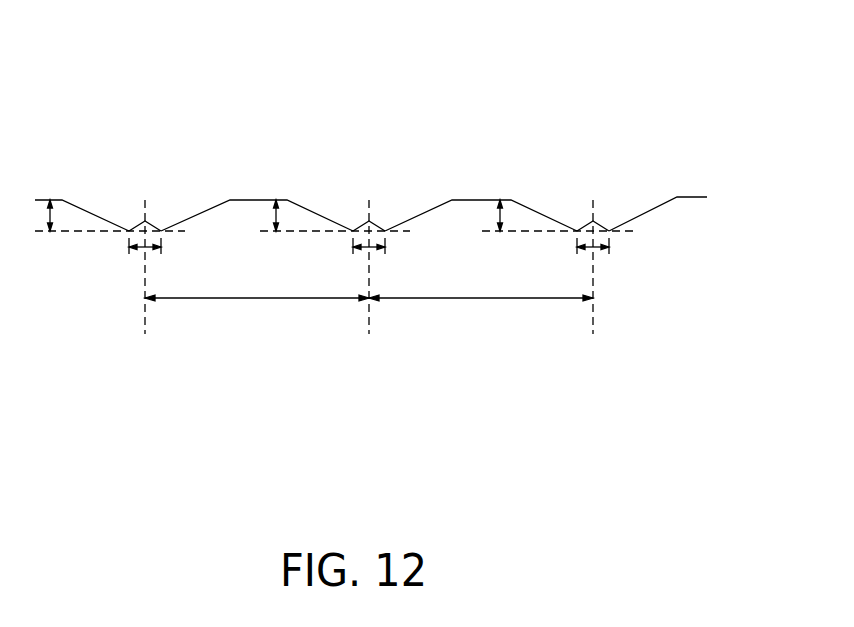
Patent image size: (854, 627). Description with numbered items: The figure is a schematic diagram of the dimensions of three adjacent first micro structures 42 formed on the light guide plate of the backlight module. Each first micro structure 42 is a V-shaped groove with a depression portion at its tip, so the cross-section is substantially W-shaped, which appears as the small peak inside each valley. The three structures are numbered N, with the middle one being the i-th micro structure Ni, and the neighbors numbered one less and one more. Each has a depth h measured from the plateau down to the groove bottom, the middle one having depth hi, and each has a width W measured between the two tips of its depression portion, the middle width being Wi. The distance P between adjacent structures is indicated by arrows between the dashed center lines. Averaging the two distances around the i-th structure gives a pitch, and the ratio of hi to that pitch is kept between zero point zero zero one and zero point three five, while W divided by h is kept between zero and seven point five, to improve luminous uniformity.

The first micro structure 42 is at (371, 191).
The adjacent first micro structures numbering N is at (374, 250).
The i-th first micro structure Ni is at (368, 250).
The depth of micro structure h is at (254, 215).
The depth of i-th micro structure hi is at (255, 215).
The width between depression portion tips W is at (378, 259).
The width of i-th micro structure Wi is at (369, 259).
The distance between adjacent micro structures P is at (369, 314).